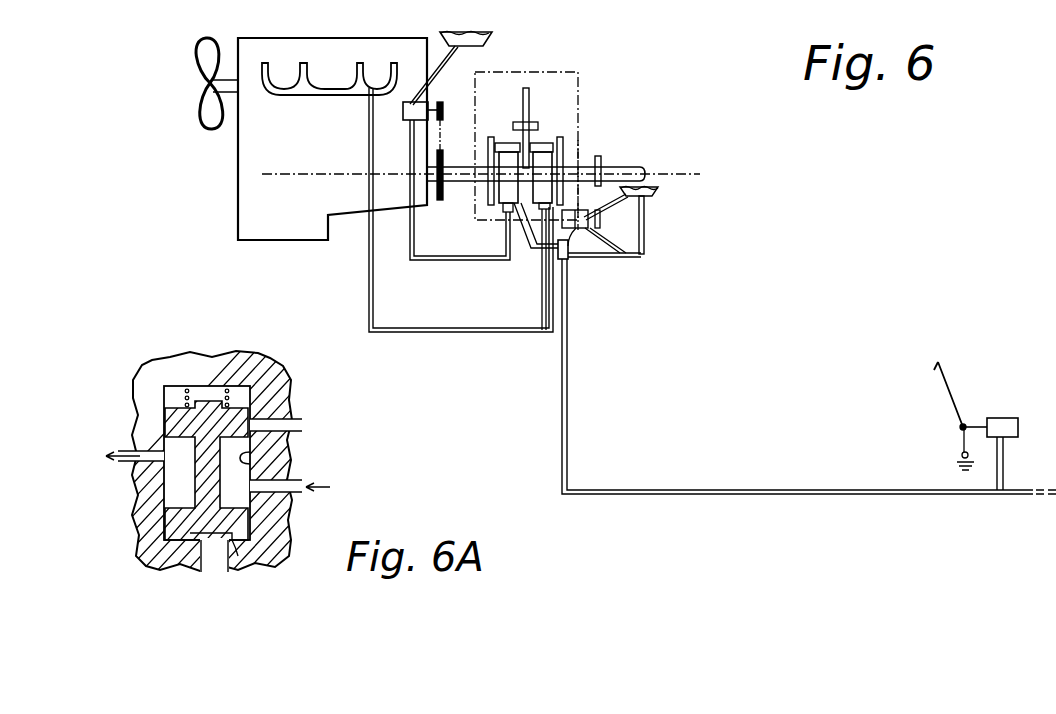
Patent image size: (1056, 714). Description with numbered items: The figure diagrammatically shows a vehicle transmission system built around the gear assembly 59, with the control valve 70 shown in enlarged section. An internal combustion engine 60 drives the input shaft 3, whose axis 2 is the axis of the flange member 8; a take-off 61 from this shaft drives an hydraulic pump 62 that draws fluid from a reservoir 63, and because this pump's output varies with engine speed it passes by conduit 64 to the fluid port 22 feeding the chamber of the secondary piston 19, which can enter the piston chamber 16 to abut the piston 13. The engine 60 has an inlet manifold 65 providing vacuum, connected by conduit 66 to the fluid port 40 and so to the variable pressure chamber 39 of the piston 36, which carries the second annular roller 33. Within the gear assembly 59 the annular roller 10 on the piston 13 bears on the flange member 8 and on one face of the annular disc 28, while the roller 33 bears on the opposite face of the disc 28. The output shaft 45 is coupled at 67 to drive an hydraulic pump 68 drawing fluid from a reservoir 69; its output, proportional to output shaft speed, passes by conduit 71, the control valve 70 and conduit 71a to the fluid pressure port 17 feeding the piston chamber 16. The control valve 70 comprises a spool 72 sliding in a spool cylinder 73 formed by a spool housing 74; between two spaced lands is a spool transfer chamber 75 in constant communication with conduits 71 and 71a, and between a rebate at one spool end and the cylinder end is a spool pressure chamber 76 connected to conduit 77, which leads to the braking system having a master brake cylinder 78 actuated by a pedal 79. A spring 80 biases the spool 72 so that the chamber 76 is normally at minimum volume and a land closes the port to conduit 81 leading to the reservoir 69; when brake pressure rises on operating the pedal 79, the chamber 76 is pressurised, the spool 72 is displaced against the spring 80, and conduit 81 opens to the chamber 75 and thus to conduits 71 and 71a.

In FIG. 6, the axis 2 is at (482, 172).
In FIG. 6, the input shaft 3 is at (482, 178).
In FIG. 6, the flange member 8 is at (488, 140).
In FIG. 6, the annular roller 10 is at (507, 143).
In FIG. 6, the piston 13 is at (502, 185).
In FIG. 6, the piston chamber 16 is at (553, 250).
In FIG. 6, the fluid pressure port 17 is at (524, 236).
In FIG. 6, the secondary piston 19 is at (503, 212).
In FIG. 6, the fluid port 22 is at (513, 215).
In FIG. 6, the annular disc 28 is at (530, 90).
In FIG. 6, the second annular roller 33 is at (548, 160).
In FIG. 6, the piston 36 is at (577, 185).
In FIG. 6, the variable pressure chamber 39 is at (562, 262).
In FIG. 6, the fluid port 40 is at (598, 246).
In FIG. 6, the output shaft 45 is at (566, 210).
In FIG. 6, the gear assembly 59 is at (556, 66).
In FIG. 6, the internal combustion engine 60 is at (258, 157).
In FIG. 6, the take-off 61 is at (437, 140).
In FIG. 6, the hydraulic pump 62 is at (403, 112).
In FIG. 6, the reservoir 63 is at (480, 40).
In FIG. 6, the conduit 64 is at (440, 262).
In FIG. 6, the inlet manifold 65 is at (328, 95).
In FIG. 6, the conduit 66 is at (412, 333).
In FIG. 6, the coupling 67 is at (606, 192).
In FIG. 6, the hydraulic pump 68 is at (612, 256).
In FIG. 6, the reservoir 69 is at (658, 190).
In FIG. 6, the control valve 70 is at (571, 256).
In FIG. 6A, the control valve 70 is at (301, 401).
In FIG. 6, the conduit 71 is at (600, 250).
In FIG. 6A, the conduit 71 is at (302, 492).
In FIG. 6, the conduit 71a is at (536, 264).
In FIG. 6A, the conduit 71a is at (118, 462).
In FIG. 6A, the spool 72 is at (170, 420).
In FIG. 6A, the spool cylinder 73 is at (250, 458).
In FIG. 6A, the spool housing 74 is at (285, 470).
In FIG. 6A, the spool transfer chamber 75 is at (180, 486).
In FIG. 6A, the spool pressure chamber 76 is at (232, 545).
In FIG. 6, the conduit 77 is at (568, 450).
In FIG. 6A, the conduit 77 is at (208, 568).
In FIG. 6, the master brake cylinder 78 is at (1003, 418).
In FIG. 6, the pedal 79 is at (950, 400).
In FIG. 6A, the spring 80 is at (181, 392).
In FIG. 6, the conduit 81 is at (646, 246).
In FIG. 6A, the conduit 81 is at (300, 428).